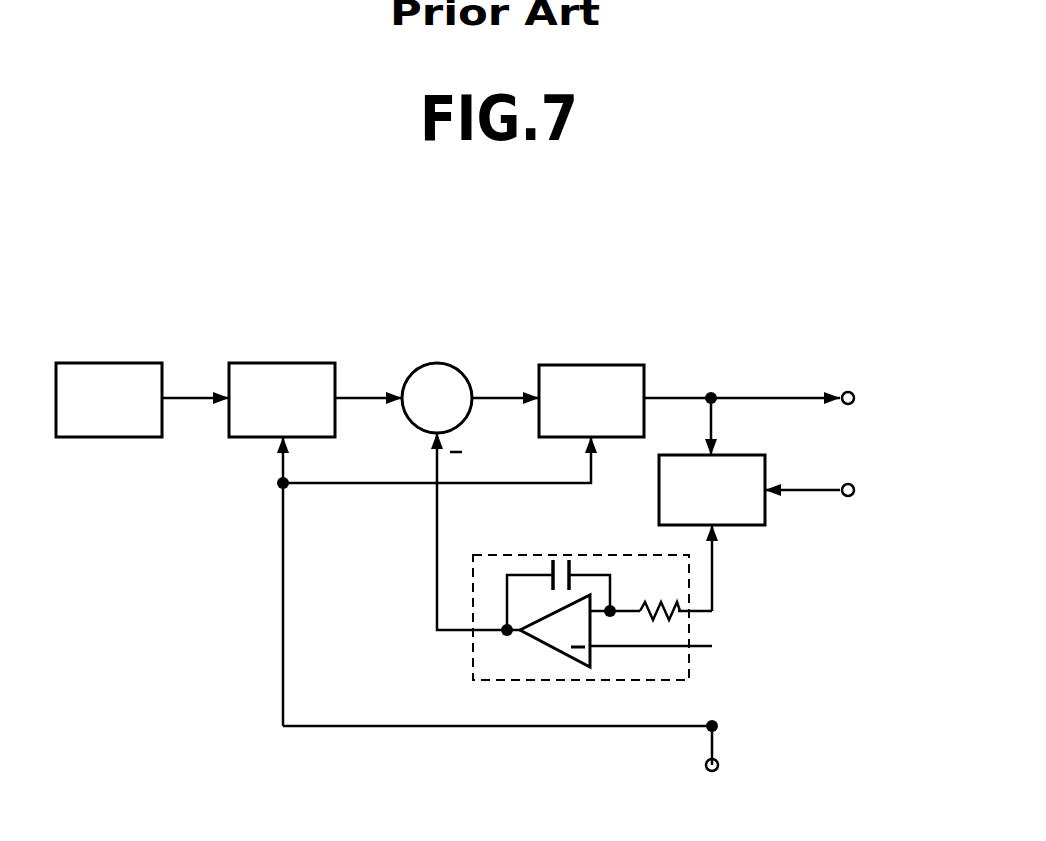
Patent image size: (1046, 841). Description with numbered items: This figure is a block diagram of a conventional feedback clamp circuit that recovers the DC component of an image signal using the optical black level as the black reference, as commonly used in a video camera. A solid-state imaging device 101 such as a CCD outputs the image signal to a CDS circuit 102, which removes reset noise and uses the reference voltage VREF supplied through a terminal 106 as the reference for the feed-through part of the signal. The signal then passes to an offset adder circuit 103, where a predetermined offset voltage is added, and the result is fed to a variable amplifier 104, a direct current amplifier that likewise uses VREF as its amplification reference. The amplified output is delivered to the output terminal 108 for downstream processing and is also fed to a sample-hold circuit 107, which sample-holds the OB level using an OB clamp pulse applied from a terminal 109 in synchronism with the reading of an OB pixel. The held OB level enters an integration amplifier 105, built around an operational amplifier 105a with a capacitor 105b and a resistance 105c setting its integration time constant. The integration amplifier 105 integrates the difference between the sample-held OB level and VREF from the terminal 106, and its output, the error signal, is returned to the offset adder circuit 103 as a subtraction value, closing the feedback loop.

The solid-state imaging device 101 is at (120, 363).
The CDS circuit 102 is at (293, 363).
The offset adder circuit 103 is at (446, 364).
The variable amplifier 104 is at (602, 365).
The integration amplifier 105 is at (515, 553).
The operational amplifier 105a is at (553, 648).
The capacitor 105b is at (575, 574).
The resistance 105c is at (672, 615).
The terminal 106 is at (718, 762).
The sample-hold circuit 107 is at (768, 466).
The output terminal 108 is at (853, 393).
The terminal 109 is at (853, 485).